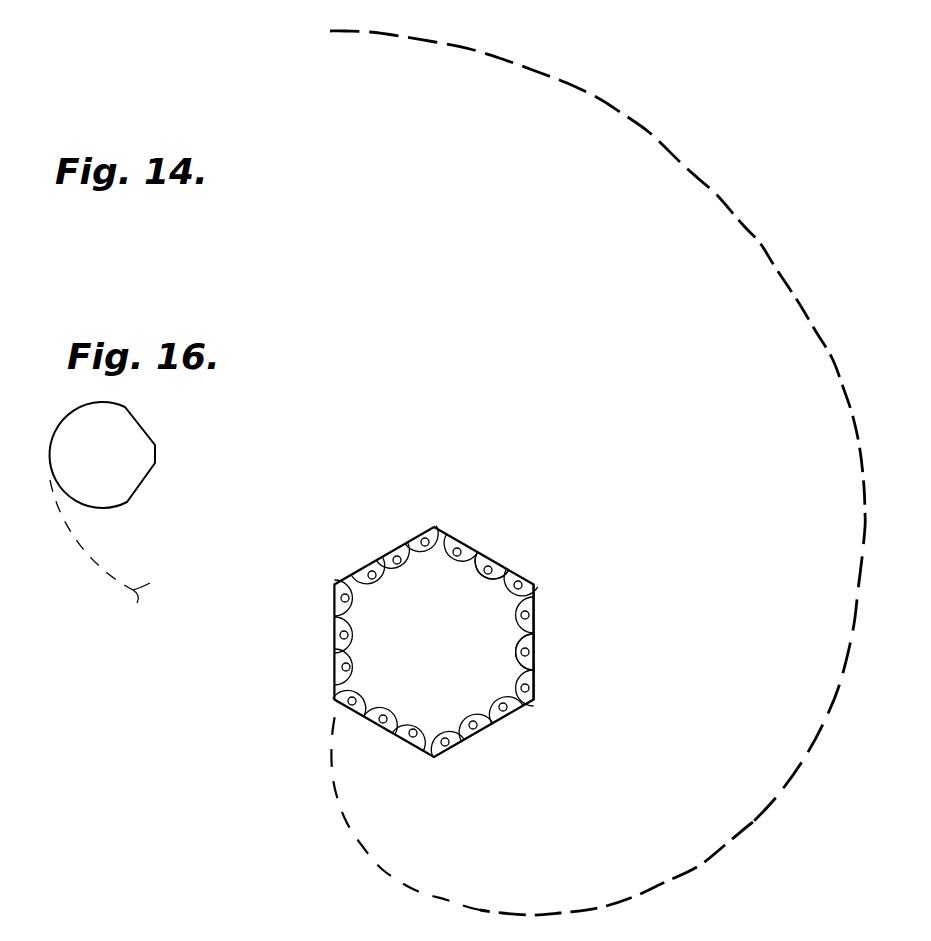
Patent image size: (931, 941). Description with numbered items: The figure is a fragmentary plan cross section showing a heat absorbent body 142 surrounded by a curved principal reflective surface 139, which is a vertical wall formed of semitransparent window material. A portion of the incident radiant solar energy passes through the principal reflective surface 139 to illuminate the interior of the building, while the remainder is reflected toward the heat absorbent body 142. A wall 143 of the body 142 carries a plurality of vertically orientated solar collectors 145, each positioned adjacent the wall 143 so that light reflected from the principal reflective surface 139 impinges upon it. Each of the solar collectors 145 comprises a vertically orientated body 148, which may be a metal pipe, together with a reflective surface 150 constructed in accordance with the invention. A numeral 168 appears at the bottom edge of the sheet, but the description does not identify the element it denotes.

In FIG. 14, the principal reflective surface 139 is at (744, 224).
In FIG. 14, the heat absorbent body 142 is at (489, 742).
In FIG. 14, the wall 143 is at (535, 632).
In FIG. 14, the solar collectors 145 is at (403, 548).
In FIG. 14, the vertically orientated bodies 148 is at (488, 577).
In FIG. 14, the reflective surfaces 150 is at (498, 582).
In FIG. 16, the element 168 is at (228, 936).